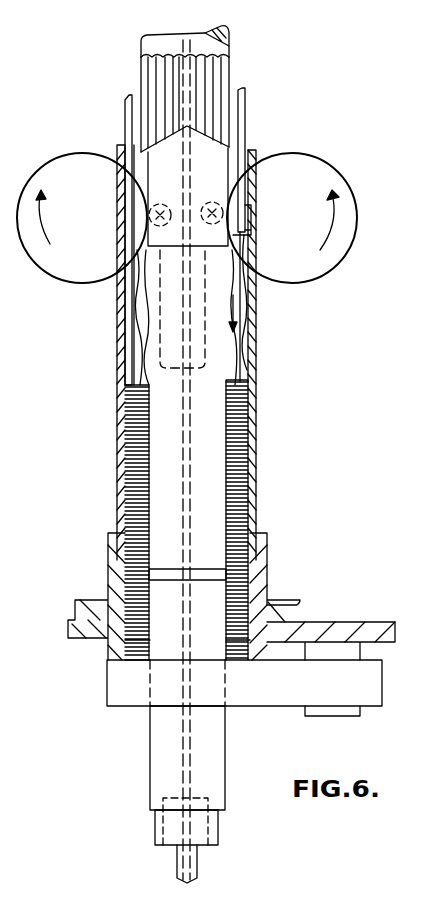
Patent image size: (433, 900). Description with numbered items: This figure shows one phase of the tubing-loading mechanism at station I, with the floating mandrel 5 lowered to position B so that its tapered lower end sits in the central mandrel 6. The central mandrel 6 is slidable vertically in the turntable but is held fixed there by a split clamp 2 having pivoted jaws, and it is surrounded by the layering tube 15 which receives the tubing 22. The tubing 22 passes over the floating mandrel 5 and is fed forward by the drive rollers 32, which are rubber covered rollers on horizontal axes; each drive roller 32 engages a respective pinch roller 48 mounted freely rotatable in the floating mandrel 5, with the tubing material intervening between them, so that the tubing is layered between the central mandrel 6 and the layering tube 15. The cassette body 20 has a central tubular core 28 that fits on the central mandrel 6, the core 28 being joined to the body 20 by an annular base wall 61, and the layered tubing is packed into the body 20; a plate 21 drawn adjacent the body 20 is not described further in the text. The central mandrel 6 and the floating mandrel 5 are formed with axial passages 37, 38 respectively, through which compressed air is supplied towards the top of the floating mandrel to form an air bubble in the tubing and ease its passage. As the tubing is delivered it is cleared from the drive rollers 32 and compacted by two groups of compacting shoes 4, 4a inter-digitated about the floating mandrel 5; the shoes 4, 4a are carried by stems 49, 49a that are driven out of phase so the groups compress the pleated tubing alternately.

The split clamp 2 is at (366, 689).
The compacting shoes 4 is at (127, 360).
The compacting shoes 4a is at (250, 220).
The floating mandrel 5 is at (230, 44).
The central mandrel 6 is at (211, 450).
The layering tube 15 is at (117, 455).
The body 20 is at (122, 601).
The mounting plate 21 is at (365, 628).
The tubing 22 is at (217, 83).
The central tubular core 28 is at (242, 604).
The drive rollers 32 is at (79, 152).
The axial passage 37 is at (180, 745).
The axial passage 38 is at (183, 88).
The pinch rollers 48 is at (192, 188).
The stems 49 is at (125, 110).
The stems 49a is at (246, 103).
The annular base wall 61 is at (130, 660).
The position B is at (257, 308).